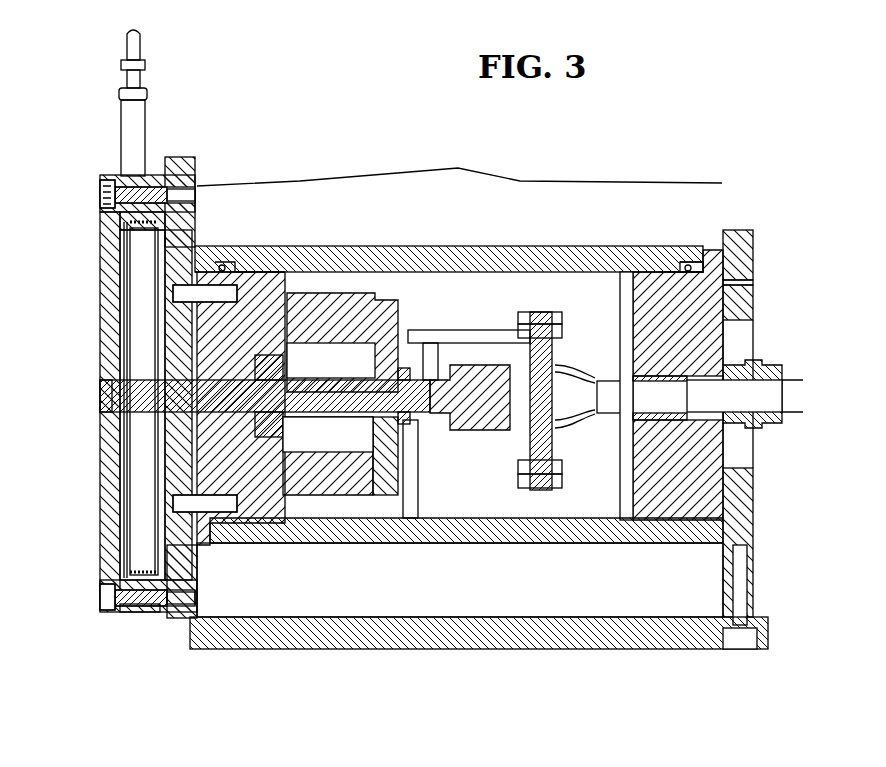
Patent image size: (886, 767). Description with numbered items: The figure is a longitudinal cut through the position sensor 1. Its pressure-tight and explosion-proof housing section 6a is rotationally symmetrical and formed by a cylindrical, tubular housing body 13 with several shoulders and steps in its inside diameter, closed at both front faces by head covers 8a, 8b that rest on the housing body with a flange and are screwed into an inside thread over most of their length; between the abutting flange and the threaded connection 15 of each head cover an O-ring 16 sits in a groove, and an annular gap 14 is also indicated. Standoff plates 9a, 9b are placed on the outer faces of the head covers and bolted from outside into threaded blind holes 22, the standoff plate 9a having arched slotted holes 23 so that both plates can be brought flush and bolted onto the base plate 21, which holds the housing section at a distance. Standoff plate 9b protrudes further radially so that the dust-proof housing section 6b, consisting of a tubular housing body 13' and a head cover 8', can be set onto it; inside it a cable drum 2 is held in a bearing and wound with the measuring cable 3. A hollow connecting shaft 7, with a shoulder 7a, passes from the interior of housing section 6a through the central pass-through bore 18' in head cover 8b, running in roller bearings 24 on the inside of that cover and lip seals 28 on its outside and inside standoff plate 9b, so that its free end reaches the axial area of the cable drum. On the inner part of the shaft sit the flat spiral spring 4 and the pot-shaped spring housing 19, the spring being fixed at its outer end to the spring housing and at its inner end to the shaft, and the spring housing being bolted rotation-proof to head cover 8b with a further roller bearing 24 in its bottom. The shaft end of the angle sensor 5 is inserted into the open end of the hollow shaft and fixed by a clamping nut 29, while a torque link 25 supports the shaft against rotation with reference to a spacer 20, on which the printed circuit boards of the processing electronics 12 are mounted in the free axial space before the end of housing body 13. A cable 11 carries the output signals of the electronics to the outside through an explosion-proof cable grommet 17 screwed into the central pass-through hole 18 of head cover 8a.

The position sensor 1 is at (297, 130).
The cable drum 2 is at (155, 228).
The measuring cable 3 is at (130, 226).
The flat spiral spring 4 is at (331, 360).
The angle sensor 5 is at (470, 397).
The housing section 6a is at (459, 167).
The housing section 6b is at (100, 26).
The shaft 7 is at (265, 396).
The shoulder 7a is at (286, 422).
The head cover 8' is at (145, 195).
The head cover 8a is at (671, 385).
The head cover 8b is at (229, 408).
The standoff plate 9a is at (745, 497).
The standoff plate 9b is at (190, 560).
The cable 11 is at (610, 377).
The processing electronics 12 is at (530, 426).
The housing body 13 is at (449, 235).
The housing body 13' is at (138, 634).
The annular gap 14 is at (268, 268).
The threaded connection 15 is at (680, 264).
The O-ring 16 is at (222, 263).
The cable grommet 17 is at (760, 364).
The pass-through opening 18 is at (661, 374).
The pass-through opening 18' is at (246, 390).
The spring housing 19 is at (340, 394).
The spacer 20 is at (428, 330).
The base plate 21 is at (295, 652).
The threaded blind hole 22 is at (186, 296).
The slotted hole 23 is at (746, 274).
The roller bearing 24 is at (272, 366).
The torque link 25 is at (443, 362).
The lip seal 28 is at (205, 432).
The clamping nut 29 is at (420, 440).